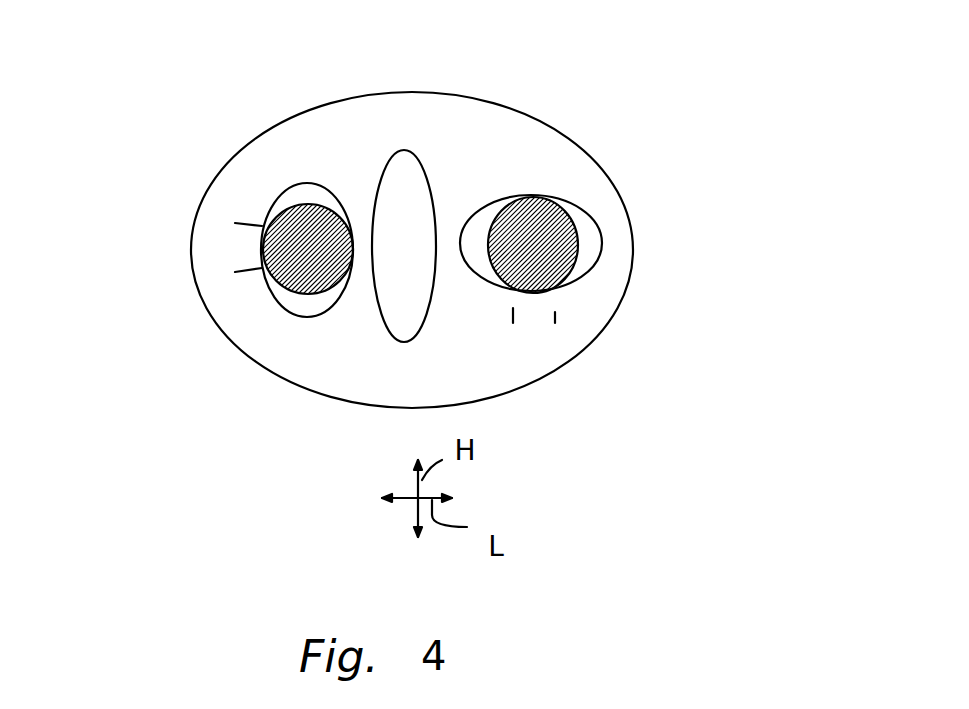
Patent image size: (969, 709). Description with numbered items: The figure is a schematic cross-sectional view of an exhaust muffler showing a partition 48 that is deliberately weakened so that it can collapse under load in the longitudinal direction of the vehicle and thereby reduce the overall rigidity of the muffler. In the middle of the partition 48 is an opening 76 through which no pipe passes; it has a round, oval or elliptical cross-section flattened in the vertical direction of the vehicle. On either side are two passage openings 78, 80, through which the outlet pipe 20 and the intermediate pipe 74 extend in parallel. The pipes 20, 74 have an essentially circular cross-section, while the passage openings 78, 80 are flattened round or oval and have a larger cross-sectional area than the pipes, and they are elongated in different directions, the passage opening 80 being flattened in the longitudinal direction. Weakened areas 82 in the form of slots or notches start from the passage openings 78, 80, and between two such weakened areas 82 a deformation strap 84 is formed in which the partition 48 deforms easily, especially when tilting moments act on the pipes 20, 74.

The outlet pipe 20 is at (580, 237).
The partition 48 is at (557, 127).
The intermediate pipe 74 is at (300, 291).
The opening 76 is at (415, 178).
The passage opening 78 is at (588, 250).
The passage opening 80 is at (300, 183).
The weakened area 82 is at (243, 217).
The deformation strap 84 is at (241, 251).